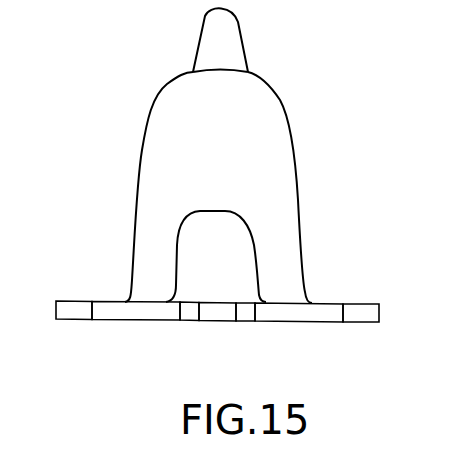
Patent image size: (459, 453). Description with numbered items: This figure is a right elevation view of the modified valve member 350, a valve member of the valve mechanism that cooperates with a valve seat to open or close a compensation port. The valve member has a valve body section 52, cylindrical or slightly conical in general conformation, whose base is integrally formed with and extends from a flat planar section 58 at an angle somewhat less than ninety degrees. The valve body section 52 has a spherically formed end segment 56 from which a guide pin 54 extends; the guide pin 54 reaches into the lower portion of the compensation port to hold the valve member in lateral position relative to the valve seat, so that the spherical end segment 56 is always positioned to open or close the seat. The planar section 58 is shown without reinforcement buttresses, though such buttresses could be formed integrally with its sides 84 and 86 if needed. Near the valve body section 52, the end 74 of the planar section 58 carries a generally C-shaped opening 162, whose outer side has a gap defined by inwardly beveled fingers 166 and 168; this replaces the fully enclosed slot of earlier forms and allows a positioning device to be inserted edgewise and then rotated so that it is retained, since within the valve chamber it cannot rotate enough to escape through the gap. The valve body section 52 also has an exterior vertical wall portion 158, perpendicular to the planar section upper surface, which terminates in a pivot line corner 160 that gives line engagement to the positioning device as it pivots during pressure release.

The modified valve member 350 is at (120, 182).
The valve body section 52 is at (273, 147).
The guide pin 54 is at (208, 42).
The spherically formed end segment 56 is at (170, 86).
The planar section 58 is at (83, 300).
The end of planar section 74 is at (305, 318).
The side of planar section 84 is at (363, 320).
The side of planar section 86 is at (67, 310).
The exterior vertical wall portion 158 is at (230, 259).
The pivot line corner 160 is at (228, 212).
The C-shaped opening 162 is at (220, 313).
The inwardly beveled finger 166 is at (245, 318).
The inwardly beveled finger 168 is at (187, 321).